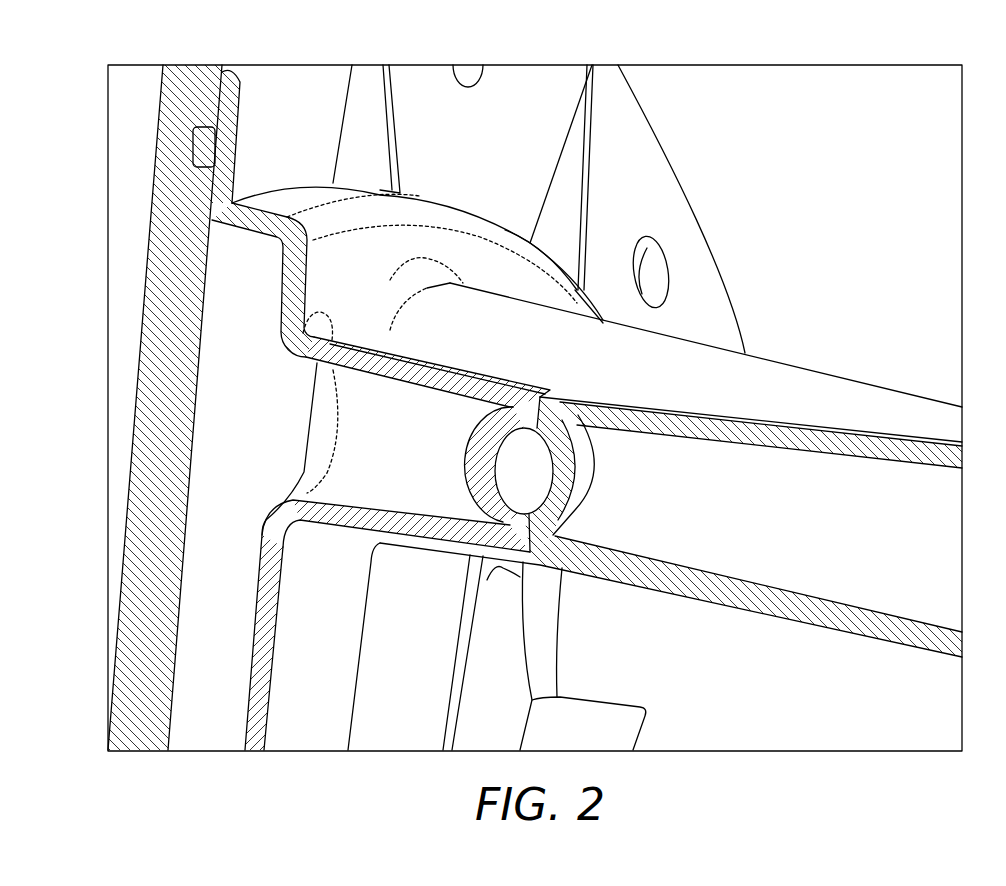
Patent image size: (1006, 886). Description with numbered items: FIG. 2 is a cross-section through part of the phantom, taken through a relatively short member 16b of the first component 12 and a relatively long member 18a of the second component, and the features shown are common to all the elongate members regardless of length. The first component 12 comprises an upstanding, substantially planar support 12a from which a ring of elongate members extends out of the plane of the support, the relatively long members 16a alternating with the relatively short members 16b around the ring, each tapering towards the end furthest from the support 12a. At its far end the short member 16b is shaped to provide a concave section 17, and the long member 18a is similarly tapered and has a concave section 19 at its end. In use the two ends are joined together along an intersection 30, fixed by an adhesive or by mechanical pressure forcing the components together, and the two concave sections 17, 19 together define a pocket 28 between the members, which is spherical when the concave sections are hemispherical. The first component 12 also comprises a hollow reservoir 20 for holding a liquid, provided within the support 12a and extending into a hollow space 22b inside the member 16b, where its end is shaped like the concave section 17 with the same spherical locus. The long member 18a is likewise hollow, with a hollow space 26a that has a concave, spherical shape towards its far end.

The first component 12 is at (532, 89).
The support 12a is at (162, 237).
The reservoir 20 is at (217, 362).
The hollow space 22b is at (357, 440).
The relatively long member 16a is at (880, 386).
The relatively short member 16b is at (402, 540).
The concave section 17 is at (482, 463).
The concave section 19 is at (594, 466).
The pocket 28 is at (555, 488).
The intersection 30 is at (520, 577).
The relatively long member 18a is at (725, 588).
The hollow space 26a is at (855, 565).